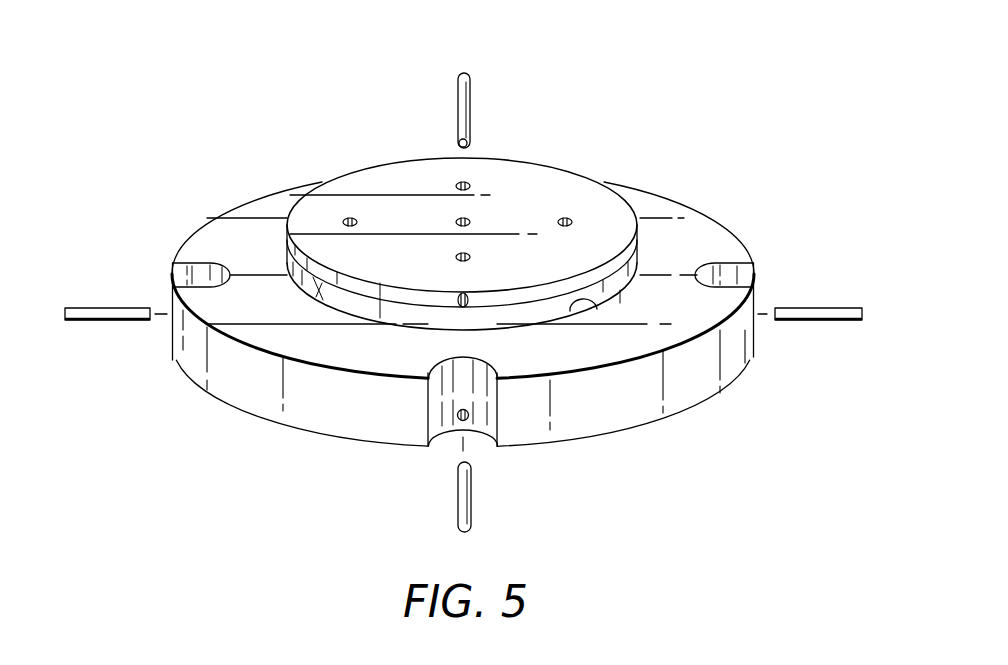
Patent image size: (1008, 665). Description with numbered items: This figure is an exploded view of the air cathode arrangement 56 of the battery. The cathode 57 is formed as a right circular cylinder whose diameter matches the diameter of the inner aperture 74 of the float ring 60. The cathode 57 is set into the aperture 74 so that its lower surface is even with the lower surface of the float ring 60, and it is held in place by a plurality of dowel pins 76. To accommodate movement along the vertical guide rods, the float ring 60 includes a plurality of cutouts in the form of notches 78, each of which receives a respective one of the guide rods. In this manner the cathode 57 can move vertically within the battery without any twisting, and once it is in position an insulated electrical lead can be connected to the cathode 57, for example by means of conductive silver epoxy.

The air cathode arrangement 56 is at (665, 108).
The cathode 57 is at (421, 168).
The float ring 60 is at (656, 205).
The inner aperture 74 is at (597, 298).
The dowel pins 76 is at (110, 312).
The notches 78 is at (183, 268).